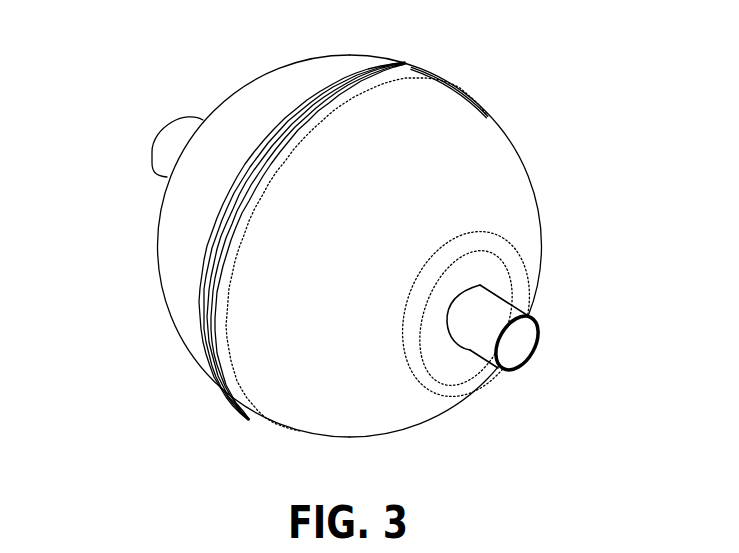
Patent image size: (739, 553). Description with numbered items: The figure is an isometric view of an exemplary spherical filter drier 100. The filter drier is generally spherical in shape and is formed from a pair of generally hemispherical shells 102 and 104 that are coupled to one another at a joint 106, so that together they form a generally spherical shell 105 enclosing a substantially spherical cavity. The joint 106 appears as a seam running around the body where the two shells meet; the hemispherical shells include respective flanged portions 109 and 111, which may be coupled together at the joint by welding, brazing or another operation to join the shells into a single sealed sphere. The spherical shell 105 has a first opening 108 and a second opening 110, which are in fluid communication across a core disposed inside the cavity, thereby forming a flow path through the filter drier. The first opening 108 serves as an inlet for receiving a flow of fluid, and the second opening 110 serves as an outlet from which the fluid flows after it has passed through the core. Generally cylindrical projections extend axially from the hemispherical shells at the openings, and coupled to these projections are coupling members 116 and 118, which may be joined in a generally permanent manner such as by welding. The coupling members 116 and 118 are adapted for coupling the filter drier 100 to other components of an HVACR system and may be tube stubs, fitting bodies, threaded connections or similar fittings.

The spherical filter drier 100 is at (351, 247).
The hemispherical shell 102 is at (500, 246).
The hemispherical shell 104 is at (198, 231).
The spherical shell 105 is at (119, 298).
The joint 106 is at (272, 247).
The first opening 108 is at (525, 342).
The flanged portion 109 is at (240, 400).
The second opening 110 is at (125, 123).
The flanged portion 111 is at (200, 323).
The coupling member 116 is at (515, 314).
The coupling member 118 is at (180, 135).